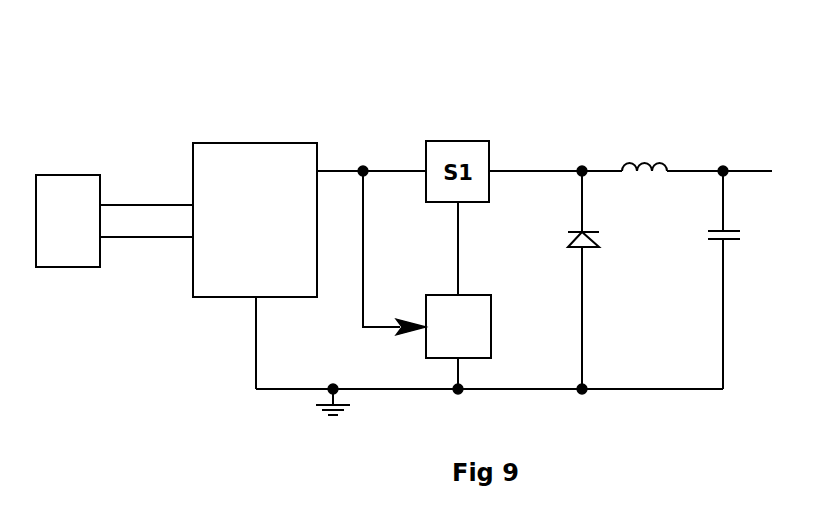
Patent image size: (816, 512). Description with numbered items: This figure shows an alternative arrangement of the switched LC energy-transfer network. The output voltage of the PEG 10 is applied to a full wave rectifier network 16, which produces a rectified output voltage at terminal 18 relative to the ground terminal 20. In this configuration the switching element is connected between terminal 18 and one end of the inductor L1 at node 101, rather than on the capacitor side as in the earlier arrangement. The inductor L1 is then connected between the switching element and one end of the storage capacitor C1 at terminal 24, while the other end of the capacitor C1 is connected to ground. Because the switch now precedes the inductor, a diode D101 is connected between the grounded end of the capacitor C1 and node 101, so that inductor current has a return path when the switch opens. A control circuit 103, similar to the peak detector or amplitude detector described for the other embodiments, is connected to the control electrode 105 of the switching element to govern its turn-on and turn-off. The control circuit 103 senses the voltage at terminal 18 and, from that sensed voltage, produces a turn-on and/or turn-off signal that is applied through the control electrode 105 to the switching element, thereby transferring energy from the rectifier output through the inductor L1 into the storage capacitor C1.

The PEG 10 is at (63, 166).
The full wave rectifier network 16 is at (208, 133).
The terminal 18 is at (340, 163).
The ground terminal 20 is at (282, 389).
The terminal 24 is at (735, 166).
The node 101 is at (580, 166).
The control circuit 103 is at (503, 323).
The control electrode 105 is at (464, 272).
The inductor L1 is at (668, 160).
The storage capacitor C1 is at (752, 240).
The diode D101 is at (601, 246).